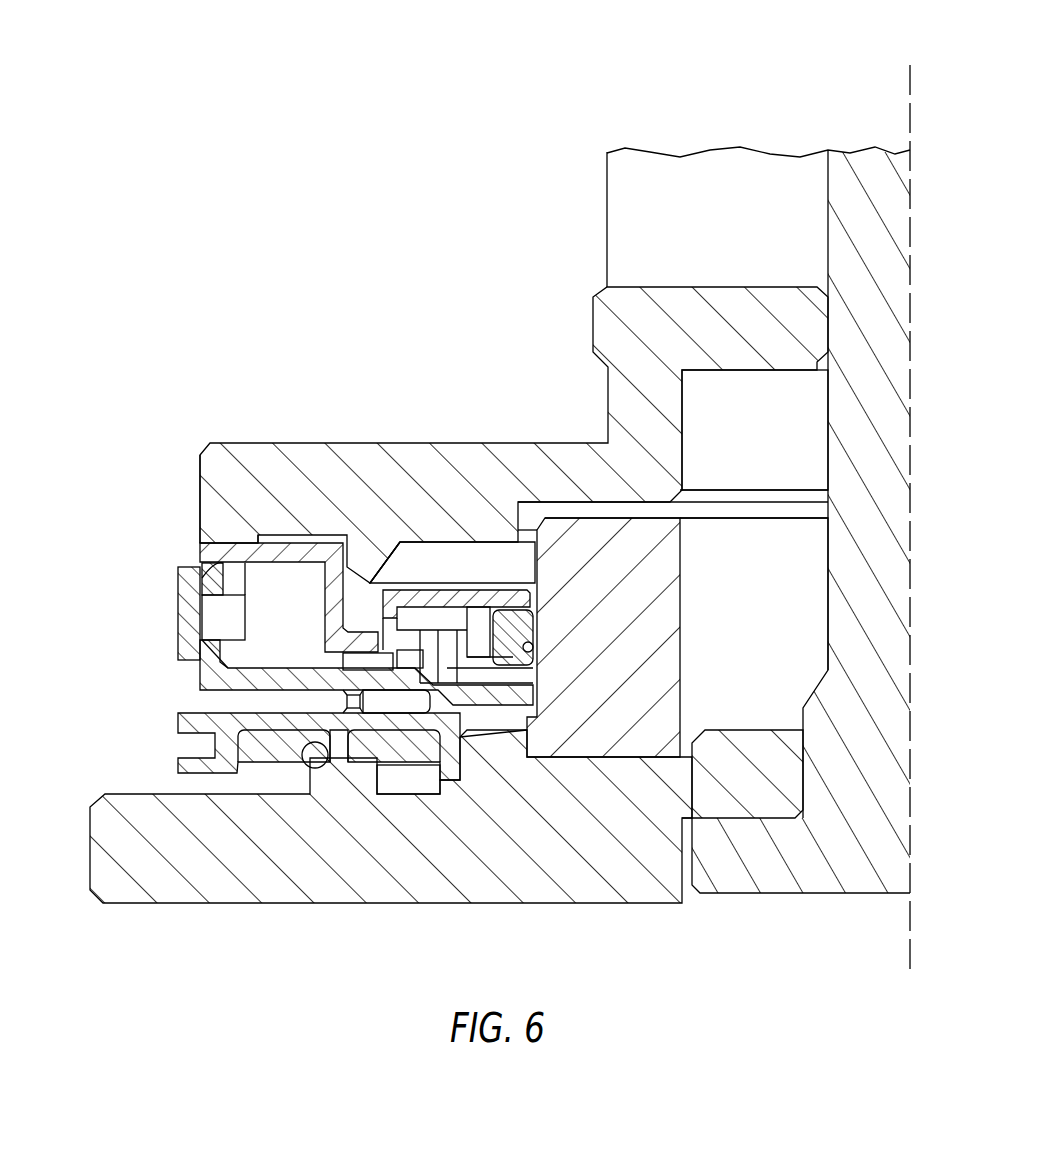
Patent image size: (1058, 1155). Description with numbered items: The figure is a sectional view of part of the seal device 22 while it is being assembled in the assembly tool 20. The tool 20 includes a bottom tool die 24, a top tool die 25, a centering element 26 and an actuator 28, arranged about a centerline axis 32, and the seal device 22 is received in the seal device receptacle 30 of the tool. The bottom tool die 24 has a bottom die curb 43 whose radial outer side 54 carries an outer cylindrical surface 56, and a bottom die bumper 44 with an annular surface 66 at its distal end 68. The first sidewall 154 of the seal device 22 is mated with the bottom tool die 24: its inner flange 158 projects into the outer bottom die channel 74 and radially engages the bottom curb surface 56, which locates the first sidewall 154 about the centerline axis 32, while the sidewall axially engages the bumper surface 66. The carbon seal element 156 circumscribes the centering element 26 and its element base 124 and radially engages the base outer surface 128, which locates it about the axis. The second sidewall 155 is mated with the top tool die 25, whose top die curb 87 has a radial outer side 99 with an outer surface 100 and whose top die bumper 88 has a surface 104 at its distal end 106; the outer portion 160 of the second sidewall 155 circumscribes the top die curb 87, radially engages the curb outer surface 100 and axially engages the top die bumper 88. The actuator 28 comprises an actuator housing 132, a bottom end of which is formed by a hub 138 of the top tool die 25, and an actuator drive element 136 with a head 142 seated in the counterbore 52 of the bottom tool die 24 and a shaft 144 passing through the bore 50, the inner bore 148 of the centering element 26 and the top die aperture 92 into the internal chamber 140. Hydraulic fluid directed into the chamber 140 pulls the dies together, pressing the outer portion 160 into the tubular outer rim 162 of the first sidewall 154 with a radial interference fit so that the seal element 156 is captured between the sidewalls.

The tool 20 is at (305, 212).
The seal device 22 is at (120, 645).
The bottom tool die 24 is at (213, 905).
The top tool die 25 is at (607, 125).
The centering element 26 is at (683, 593).
The actuator 28 is at (555, 320).
The seal device receptacle 30 is at (445, 548).
The centerline axis 32 is at (890, 68).
The bottom die curb 43 is at (510, 765).
The bottom die bumper 44 is at (300, 778).
The bore 50 is at (797, 775).
The counterbore 52 is at (687, 900).
The radial outer side 54 is at (283, 787).
The outer surface 56 is at (165, 740).
The surface 66 is at (323, 792).
The distal end 68 is at (318, 765).
The outer bottom die channel 74 is at (420, 790).
The top die curb 87 is at (385, 578).
The top die bumper 88 is at (197, 530).
The top die aperture 92 is at (764, 439).
The radial outer side 99 is at (289, 554).
The outer surface 100 is at (322, 560).
The surface 104 is at (155, 554).
The distal end 106 is at (205, 556).
The element base 124 is at (683, 620).
The outer surface 128 is at (533, 648).
The actuator housing 132 is at (555, 320).
The actuator drive element 136 is at (801, 476).
The hub 138 is at (555, 320).
The internal chamber 140 is at (712, 172).
The head 142 is at (782, 903).
The shaft 144 is at (866, 150).
The inner bore 148 is at (810, 629).
The first sidewall 154 is at (283, 787).
The second sidewall 155 is at (237, 540).
The carbon seal element 156 is at (505, 605).
The inner flange 158 is at (433, 745).
The outer portion 160 is at (222, 600).
The tubular outer rim 162 is at (172, 582).